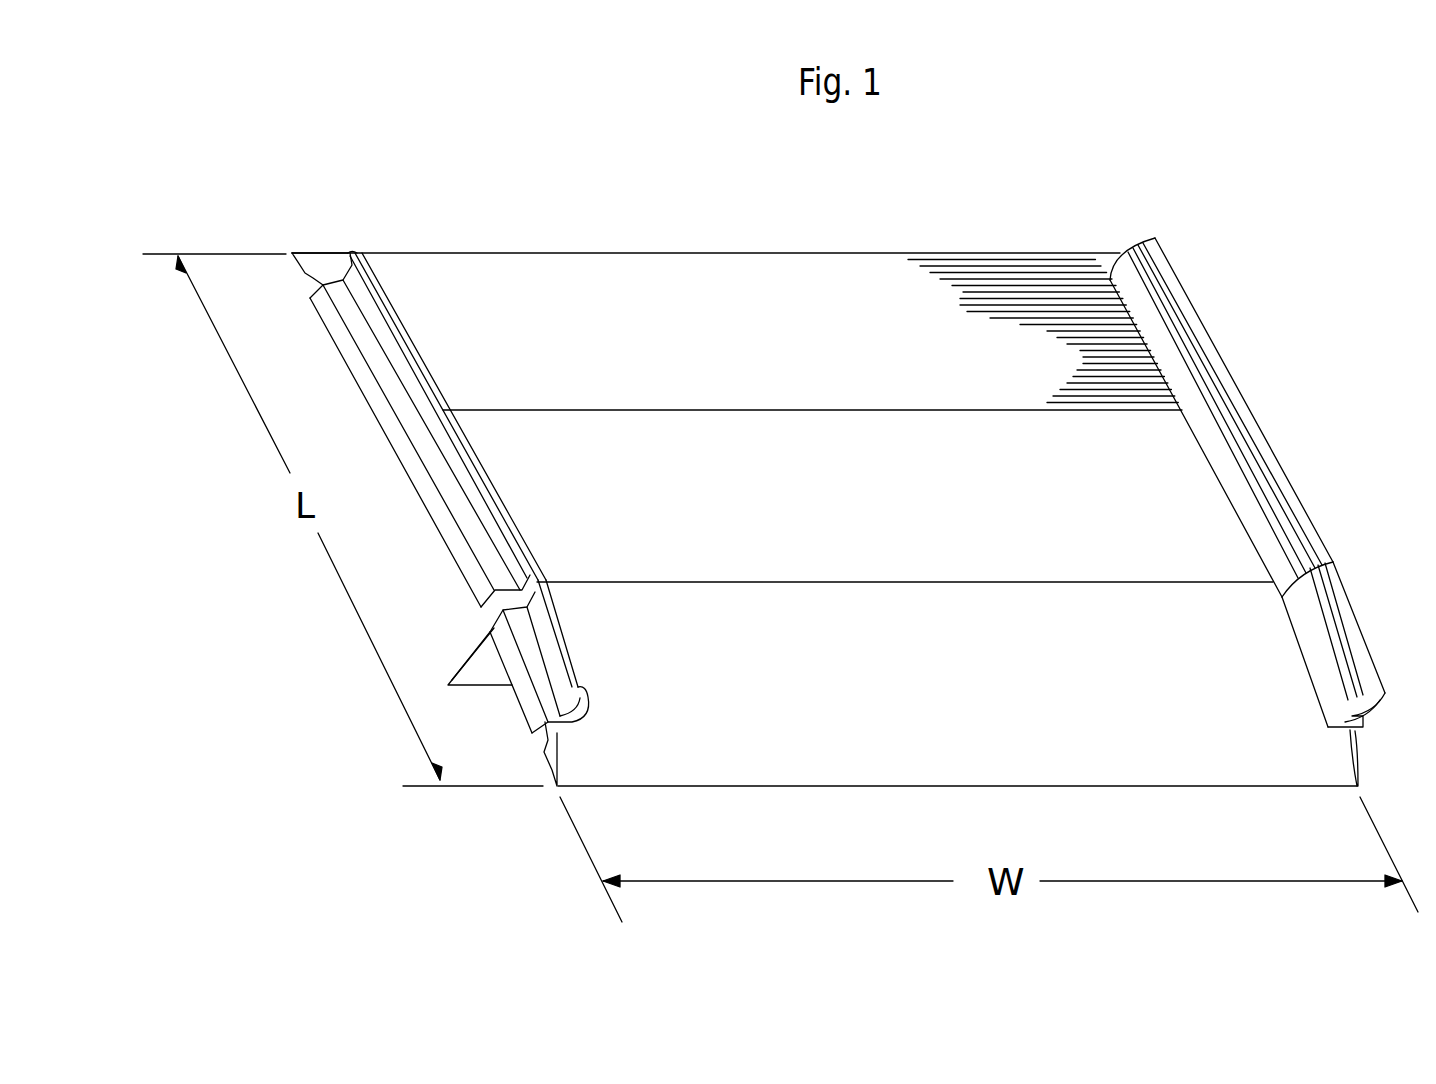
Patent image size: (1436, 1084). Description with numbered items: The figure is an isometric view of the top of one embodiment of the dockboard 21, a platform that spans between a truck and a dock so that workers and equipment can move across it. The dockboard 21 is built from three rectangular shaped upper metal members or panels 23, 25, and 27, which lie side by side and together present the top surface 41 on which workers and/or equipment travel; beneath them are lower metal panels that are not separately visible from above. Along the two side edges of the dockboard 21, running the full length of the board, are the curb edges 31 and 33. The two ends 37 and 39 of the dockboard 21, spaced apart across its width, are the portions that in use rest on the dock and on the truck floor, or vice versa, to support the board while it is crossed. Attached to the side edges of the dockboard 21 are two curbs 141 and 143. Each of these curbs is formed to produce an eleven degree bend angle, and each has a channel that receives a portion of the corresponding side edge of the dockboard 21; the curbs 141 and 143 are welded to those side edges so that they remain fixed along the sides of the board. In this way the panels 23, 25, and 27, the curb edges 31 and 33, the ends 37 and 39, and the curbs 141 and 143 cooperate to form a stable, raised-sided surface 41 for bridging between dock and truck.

The dockboard 21 is at (1198, 260).
The upper metal panel 23 is at (1238, 550).
The upper metal panel 25 is at (663, 272).
The upper metal panel 27 is at (1263, 765).
The curb edge 31 is at (449, 493).
The curb edge 33 is at (1267, 482).
The end 37 is at (847, 787).
The end 39 is at (322, 250).
The top surface 41 is at (850, 310).
The curb 141 is at (378, 445).
The curb 143 is at (1218, 353).